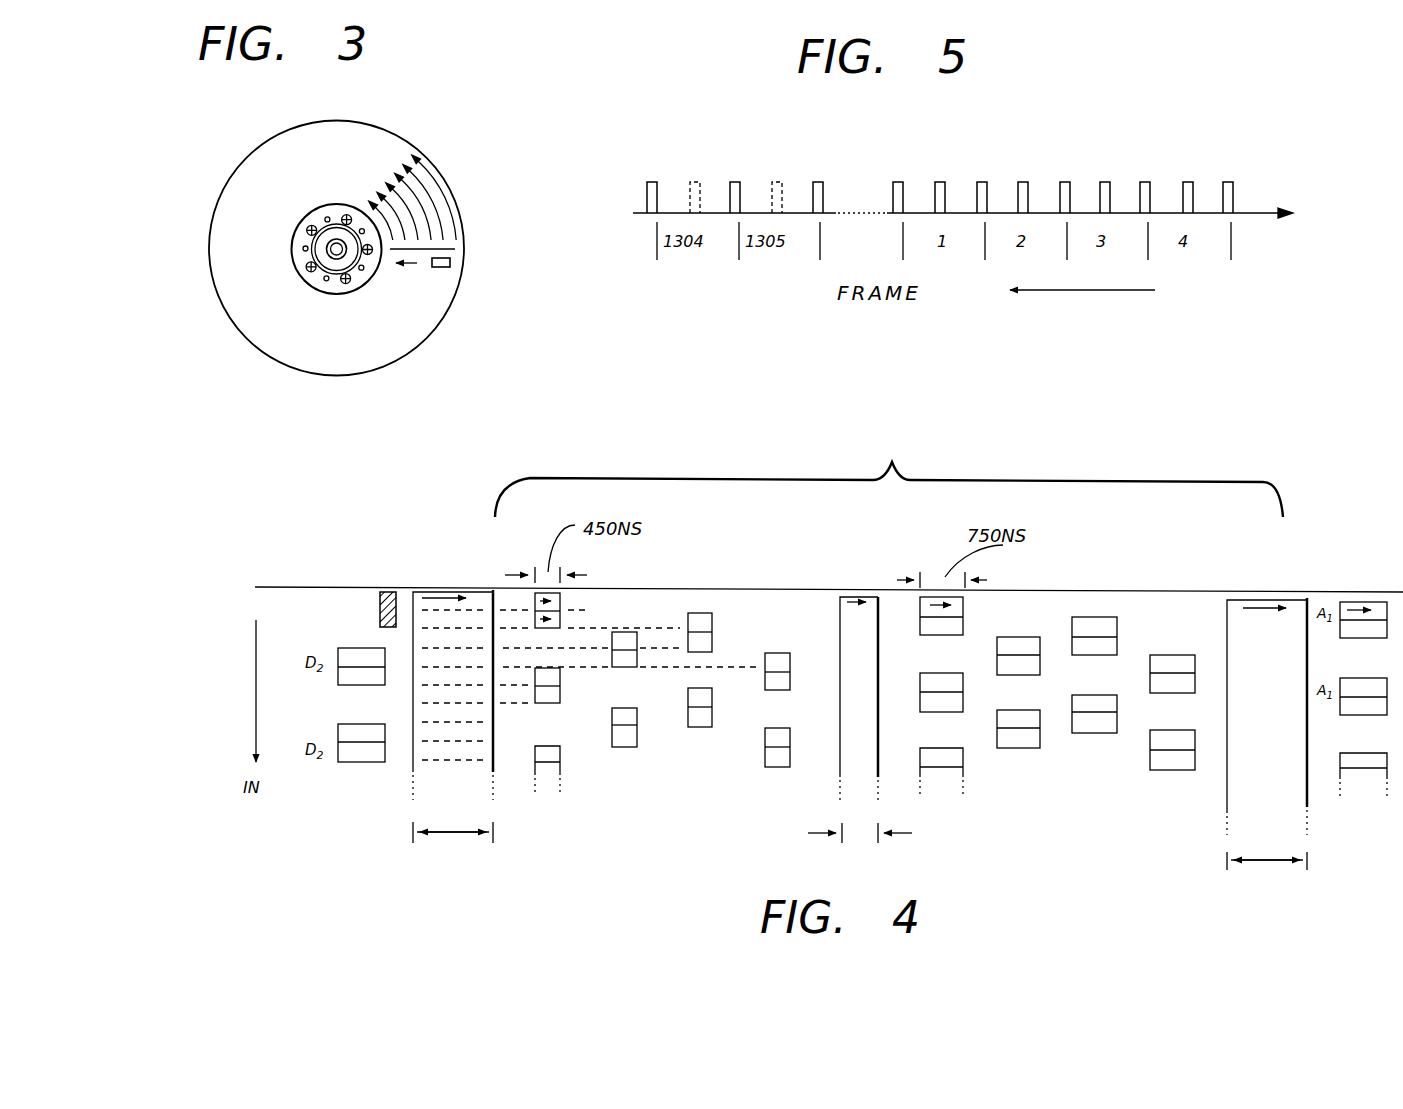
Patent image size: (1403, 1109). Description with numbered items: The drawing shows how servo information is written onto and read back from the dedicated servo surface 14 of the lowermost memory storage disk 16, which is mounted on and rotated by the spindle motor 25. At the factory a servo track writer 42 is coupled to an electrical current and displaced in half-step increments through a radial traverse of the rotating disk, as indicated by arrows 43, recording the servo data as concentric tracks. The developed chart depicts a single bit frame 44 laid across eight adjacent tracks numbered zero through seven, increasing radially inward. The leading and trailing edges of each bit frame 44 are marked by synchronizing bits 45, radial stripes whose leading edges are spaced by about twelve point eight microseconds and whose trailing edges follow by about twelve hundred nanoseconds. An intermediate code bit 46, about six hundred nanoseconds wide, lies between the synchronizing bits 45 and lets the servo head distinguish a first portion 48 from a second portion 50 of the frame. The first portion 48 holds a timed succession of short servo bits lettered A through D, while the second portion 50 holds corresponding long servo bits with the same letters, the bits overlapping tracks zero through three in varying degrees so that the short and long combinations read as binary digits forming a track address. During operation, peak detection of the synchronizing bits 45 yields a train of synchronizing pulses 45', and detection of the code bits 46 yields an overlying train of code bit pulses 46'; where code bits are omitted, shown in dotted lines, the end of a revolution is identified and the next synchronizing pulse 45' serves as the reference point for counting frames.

In FIG. 3, the dedicated servo surface 14 is at (393, 340).
In FIG. 3, the memory storage disk 16 is at (293, 368).
In FIG. 3, the spindle motor 25 is at (332, 263).
In FIG. 3, the servo track writer 42 is at (441, 267).
In FIG. 4, the servo track writer 42 is at (378, 599).
In FIG. 3, the arrows 43 is at (410, 263).
In FIG. 4, the bit frame 44 is at (889, 477).
In FIG. 4, the synchronizing bit 45 is at (843, 715).
In FIG. 4, the code bit 46 is at (841, 704).
In FIG. 4, the first portion 48 is at (640, 800).
In FIG. 4, the second portion 50 is at (1058, 800).
In FIG. 5, the synchronizing pulse 45' is at (883, 157).
In FIG. 5, the code bit pulse 46' is at (1085, 148).